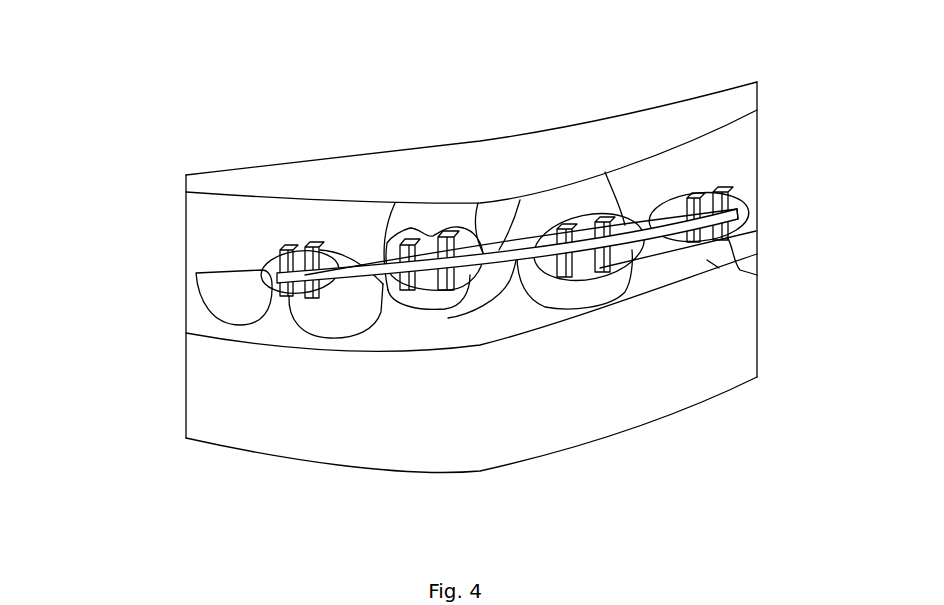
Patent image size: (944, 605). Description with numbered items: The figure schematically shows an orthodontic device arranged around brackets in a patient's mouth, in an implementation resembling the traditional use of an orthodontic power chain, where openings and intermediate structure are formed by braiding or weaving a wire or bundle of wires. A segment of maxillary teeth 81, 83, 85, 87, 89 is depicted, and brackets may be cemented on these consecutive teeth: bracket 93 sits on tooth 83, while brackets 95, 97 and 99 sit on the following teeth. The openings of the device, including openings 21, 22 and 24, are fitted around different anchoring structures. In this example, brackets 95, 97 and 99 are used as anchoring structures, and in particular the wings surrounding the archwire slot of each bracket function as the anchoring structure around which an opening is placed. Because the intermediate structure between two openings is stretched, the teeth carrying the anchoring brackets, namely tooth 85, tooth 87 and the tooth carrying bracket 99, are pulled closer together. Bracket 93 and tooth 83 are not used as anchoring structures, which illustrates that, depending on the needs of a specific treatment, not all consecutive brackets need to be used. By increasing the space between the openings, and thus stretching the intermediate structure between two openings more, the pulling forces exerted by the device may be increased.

The opening 21 is at (262, 271).
The opening 22 is at (385, 292).
The opening 24 is at (710, 196).
The maxillary tooth 81 is at (233, 303).
The maxillary tooth 83 is at (322, 330).
The maxillary tooth 85 is at (476, 303).
The maxillary tooth 87 is at (603, 287).
The maxillary tooth 89 is at (730, 270).
The bracket 93 is at (329, 250).
The bracket 95 is at (440, 232).
The bracket 97 is at (560, 222).
The bracket 99 is at (742, 214).